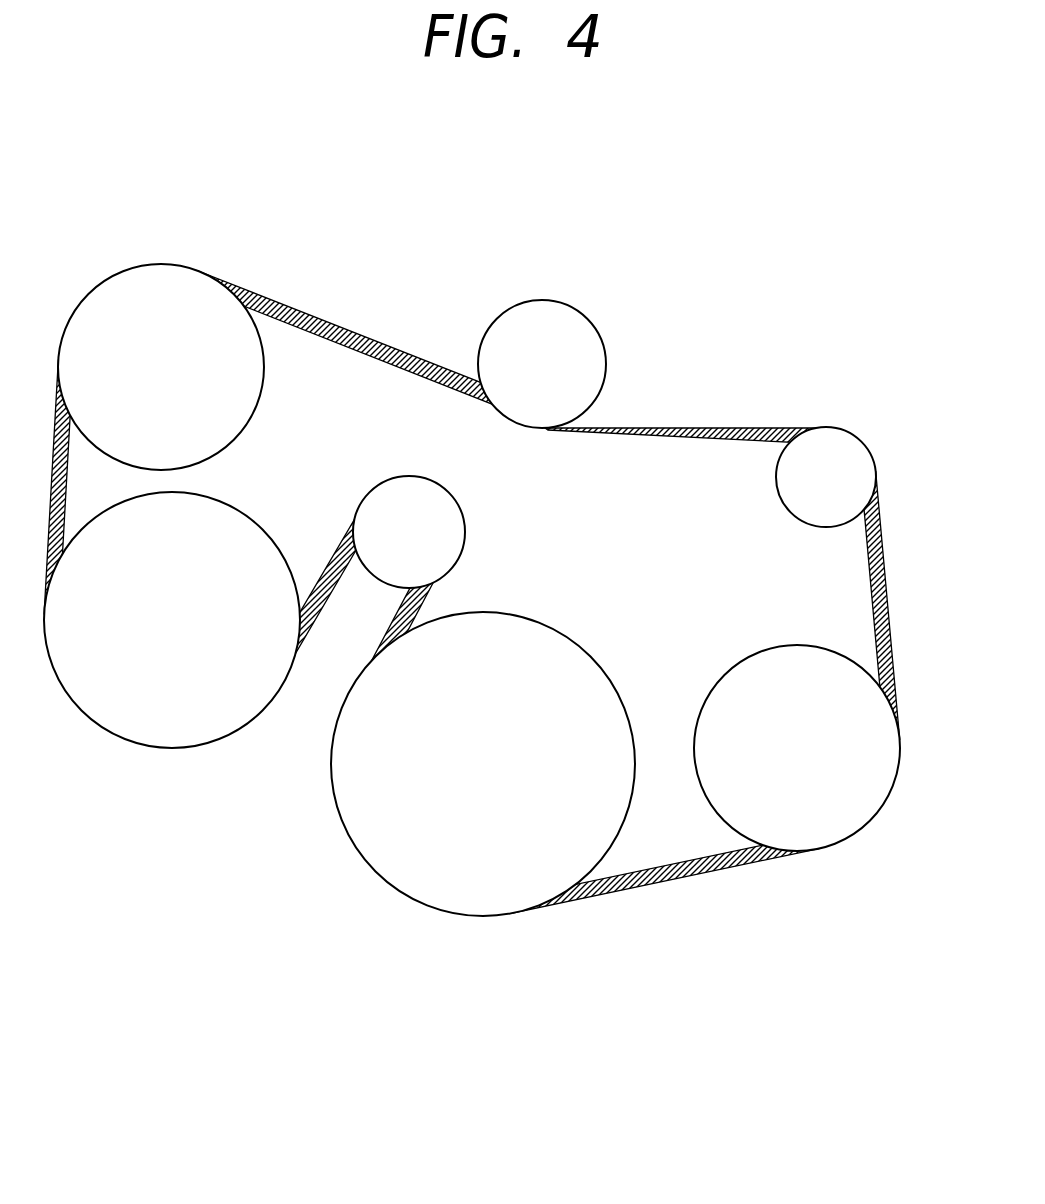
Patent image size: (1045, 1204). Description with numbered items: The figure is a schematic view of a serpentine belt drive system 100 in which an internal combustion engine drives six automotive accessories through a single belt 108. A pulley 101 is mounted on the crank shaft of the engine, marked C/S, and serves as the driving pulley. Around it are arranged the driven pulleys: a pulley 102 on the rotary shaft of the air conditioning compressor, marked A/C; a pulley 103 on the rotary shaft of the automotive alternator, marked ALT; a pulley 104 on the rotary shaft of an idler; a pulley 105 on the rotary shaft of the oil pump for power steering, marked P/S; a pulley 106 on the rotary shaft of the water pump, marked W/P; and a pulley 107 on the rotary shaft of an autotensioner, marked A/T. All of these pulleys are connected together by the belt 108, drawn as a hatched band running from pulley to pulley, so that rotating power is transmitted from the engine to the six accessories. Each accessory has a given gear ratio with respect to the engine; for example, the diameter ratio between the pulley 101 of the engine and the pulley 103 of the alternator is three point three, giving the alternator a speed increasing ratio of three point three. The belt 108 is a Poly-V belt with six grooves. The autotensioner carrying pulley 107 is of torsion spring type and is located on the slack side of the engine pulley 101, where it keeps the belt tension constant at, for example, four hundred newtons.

The serpentine belt drive system 100 is at (812, 278).
The pulley 101 is at (481, 873).
The pulley 102 is at (840, 815).
The pulley 103 is at (842, 445).
The pulley 104 is at (534, 320).
The pulley 105 is at (150, 275).
The pulley 106 is at (233, 530).
The pulley 107 is at (450, 532).
The belt 108 is at (697, 420).